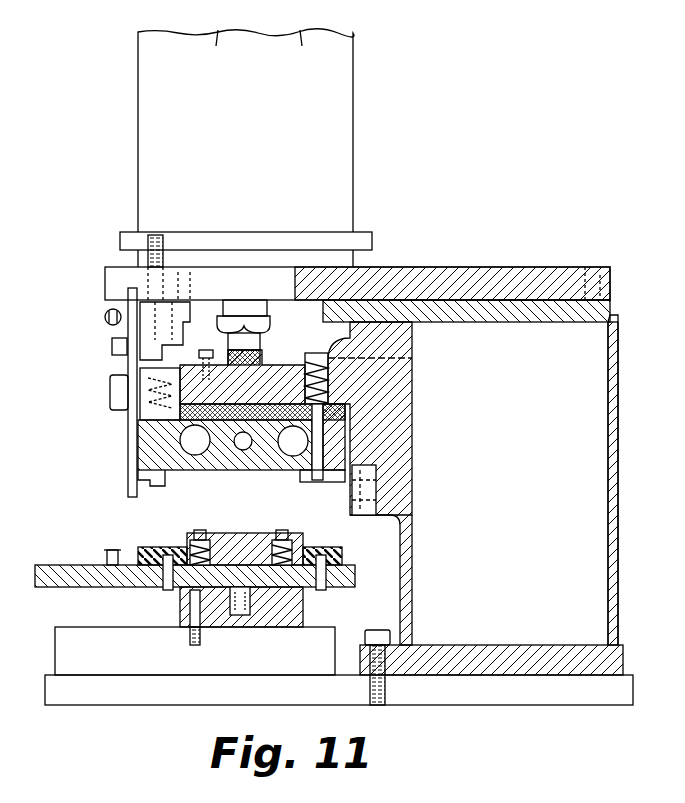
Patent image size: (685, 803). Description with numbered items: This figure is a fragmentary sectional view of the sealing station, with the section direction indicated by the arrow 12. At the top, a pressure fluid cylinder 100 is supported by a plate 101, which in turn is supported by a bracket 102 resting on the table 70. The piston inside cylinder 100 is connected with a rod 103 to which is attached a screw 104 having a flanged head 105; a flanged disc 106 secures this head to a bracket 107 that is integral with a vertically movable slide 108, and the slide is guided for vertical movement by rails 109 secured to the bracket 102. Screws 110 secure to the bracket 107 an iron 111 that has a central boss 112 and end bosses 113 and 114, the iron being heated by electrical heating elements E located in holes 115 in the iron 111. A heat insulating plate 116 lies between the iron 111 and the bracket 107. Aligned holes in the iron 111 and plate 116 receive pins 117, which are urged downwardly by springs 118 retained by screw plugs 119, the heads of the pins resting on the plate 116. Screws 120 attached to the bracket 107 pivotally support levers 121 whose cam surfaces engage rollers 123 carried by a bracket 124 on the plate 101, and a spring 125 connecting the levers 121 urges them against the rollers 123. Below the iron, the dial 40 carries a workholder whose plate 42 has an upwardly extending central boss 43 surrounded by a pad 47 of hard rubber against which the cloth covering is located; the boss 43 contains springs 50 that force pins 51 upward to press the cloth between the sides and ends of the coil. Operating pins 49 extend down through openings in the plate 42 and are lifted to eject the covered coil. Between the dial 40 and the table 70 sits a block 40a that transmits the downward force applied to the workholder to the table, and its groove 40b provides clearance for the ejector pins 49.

The pressure fluid cylinder 100 is at (355, 95).
The section view direction arrow 12 is at (100, 216).
The plate 101 is at (472, 266).
The bracket 102 is at (611, 312).
The rod 103 is at (258, 306).
The screw 104 is at (262, 345).
The flanged head 105 is at (228, 368).
The flanged disc 106 is at (295, 358).
The bracket 107 is at (199, 366).
The vertically movable slide 108 is at (380, 386).
The rails 109 is at (403, 462).
The screws 110 is at (412, 357).
The iron 111 is at (370, 421).
The central boss 112 is at (252, 471).
The end boss 113 is at (152, 481).
The end boss 114 is at (322, 473).
The holes 115 is at (195, 447).
The heat insulating plate 116 is at (345, 418).
The pins 117 is at (305, 500).
The springs 118 is at (360, 380).
The screw plugs 119 is at (380, 343).
The screws 120 is at (110, 393).
The levers 121 is at (127, 441).
The rollers 123 is at (122, 356).
The bracket 124 is at (150, 338).
The spring 125 is at (105, 321).
The electrical heating elements E is at (237, 486).
The dial 40 is at (80, 583).
The block 40a is at (292, 628).
The groove 40b is at (228, 625).
The plate 42 is at (343, 560).
The central boss 43 is at (240, 540).
The pad 47 is at (172, 547).
The operating pin 49 is at (245, 615).
The springs 50 is at (172, 588).
The pins 51 is at (200, 530).
The table 70 is at (625, 690).